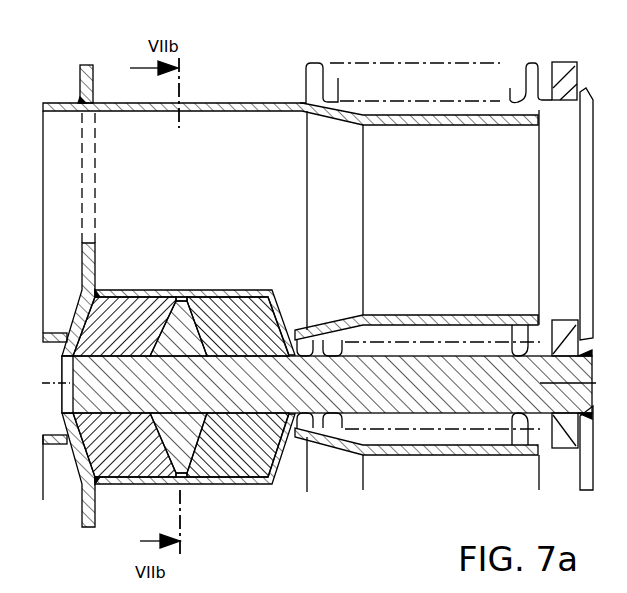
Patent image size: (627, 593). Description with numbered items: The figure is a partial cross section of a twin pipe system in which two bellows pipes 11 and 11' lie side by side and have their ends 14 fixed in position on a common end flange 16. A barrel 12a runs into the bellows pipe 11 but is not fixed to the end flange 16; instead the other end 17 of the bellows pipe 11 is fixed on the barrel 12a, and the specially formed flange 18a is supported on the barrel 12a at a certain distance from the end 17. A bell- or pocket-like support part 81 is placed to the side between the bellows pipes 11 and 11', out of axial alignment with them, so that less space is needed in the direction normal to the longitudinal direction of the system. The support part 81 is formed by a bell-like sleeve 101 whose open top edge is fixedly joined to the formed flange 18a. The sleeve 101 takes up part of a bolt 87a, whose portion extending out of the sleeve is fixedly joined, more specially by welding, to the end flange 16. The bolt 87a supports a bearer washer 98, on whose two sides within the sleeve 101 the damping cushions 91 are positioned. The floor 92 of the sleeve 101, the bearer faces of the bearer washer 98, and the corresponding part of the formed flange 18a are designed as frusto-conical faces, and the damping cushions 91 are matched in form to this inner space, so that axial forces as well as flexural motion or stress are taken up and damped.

The barrel 12a is at (226, 101).
The other end of the bellows pipe 17 is at (288, 101).
The bellows pipe 11 is at (531, 62).
The end flange 16 is at (573, 80).
The ends of the bellows pipes 14 is at (590, 98).
The bellows pipe 11' is at (543, 401).
The bolt 87a is at (72, 410).
The formed flange 18a is at (94, 72).
The floor of the sleeve 92 is at (282, 310).
The bell-like sleeve 101 is at (139, 290).
The bearer washer 98 is at (203, 300).
The support part 81 is at (268, 291).
The damping cushion 91 is at (136, 456).